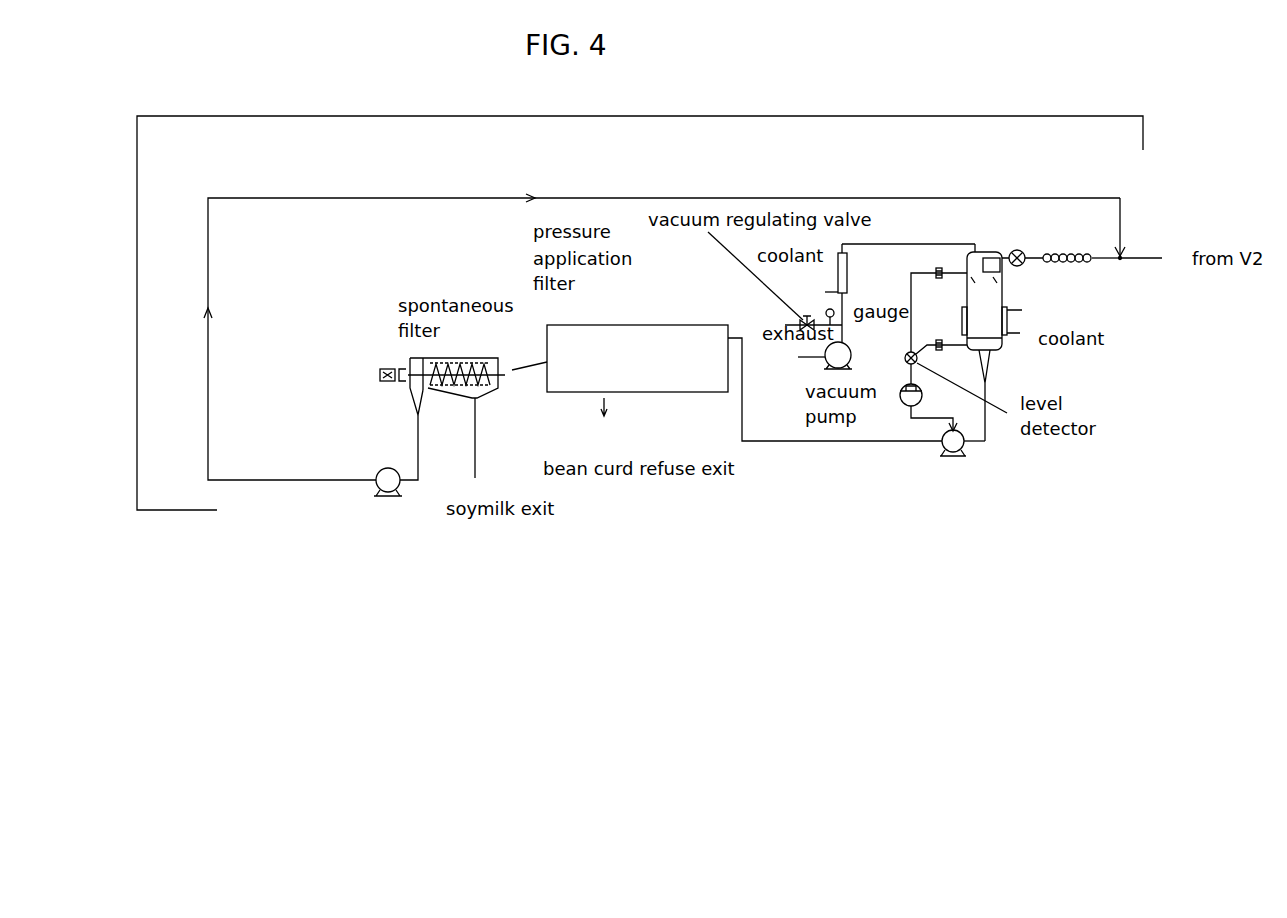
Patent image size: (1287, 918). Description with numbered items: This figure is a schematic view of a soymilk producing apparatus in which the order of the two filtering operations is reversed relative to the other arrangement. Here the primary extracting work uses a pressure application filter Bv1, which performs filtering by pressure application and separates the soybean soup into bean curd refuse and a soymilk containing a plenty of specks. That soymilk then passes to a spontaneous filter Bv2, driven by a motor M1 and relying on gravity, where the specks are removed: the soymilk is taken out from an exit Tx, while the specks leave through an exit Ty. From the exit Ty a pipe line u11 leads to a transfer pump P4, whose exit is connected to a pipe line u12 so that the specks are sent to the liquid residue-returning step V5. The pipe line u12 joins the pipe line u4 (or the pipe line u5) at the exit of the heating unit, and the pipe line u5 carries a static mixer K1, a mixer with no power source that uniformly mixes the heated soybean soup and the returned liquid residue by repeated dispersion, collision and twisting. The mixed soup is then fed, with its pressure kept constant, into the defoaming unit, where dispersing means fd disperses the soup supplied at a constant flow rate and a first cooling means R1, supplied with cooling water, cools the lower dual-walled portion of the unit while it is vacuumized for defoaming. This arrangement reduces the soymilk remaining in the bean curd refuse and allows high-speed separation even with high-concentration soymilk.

The liquid residue-returning step V5 is at (683, 116).
The pipe line u12 is at (828, 197).
The pipe line u5 is at (1110, 257).
The pipe line u4 is at (1143, 258).
The static mixer K1 is at (1107, 272).
The dispersing means fd is at (1002, 272).
The first cooling means R1 is at (1046, 314).
The pressure application filter Bv1 is at (587, 325).
The spontaneous filter Bv2 is at (410, 360).
The motor M1 is at (380, 372).
The exit Ty is at (387, 387).
The pipe line u11 is at (420, 466).
The exit Tx is at (500, 438).
The transfer pump P4 is at (380, 477).